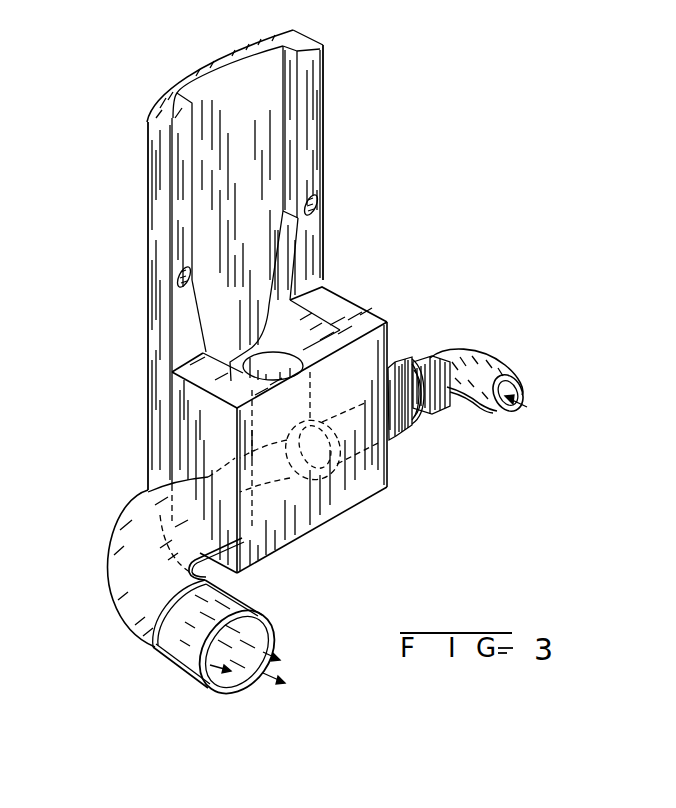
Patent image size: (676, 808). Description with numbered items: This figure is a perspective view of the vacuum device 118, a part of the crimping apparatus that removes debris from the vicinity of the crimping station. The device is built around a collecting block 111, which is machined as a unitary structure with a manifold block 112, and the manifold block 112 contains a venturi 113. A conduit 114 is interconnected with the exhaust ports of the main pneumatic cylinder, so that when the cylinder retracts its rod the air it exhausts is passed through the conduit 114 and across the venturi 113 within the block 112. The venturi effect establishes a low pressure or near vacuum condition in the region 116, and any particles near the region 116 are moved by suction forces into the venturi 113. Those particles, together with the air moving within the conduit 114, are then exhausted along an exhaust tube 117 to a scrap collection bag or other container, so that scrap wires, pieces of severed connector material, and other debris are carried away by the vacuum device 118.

The collecting block 111 is at (307, 145).
The manifold block 112 is at (366, 318).
The venturi 113 is at (285, 455).
The conduit 114 is at (492, 364).
The region 116 is at (273, 357).
The exhaust tube 117 is at (122, 546).
The vacuum device 118 is at (219, 260).